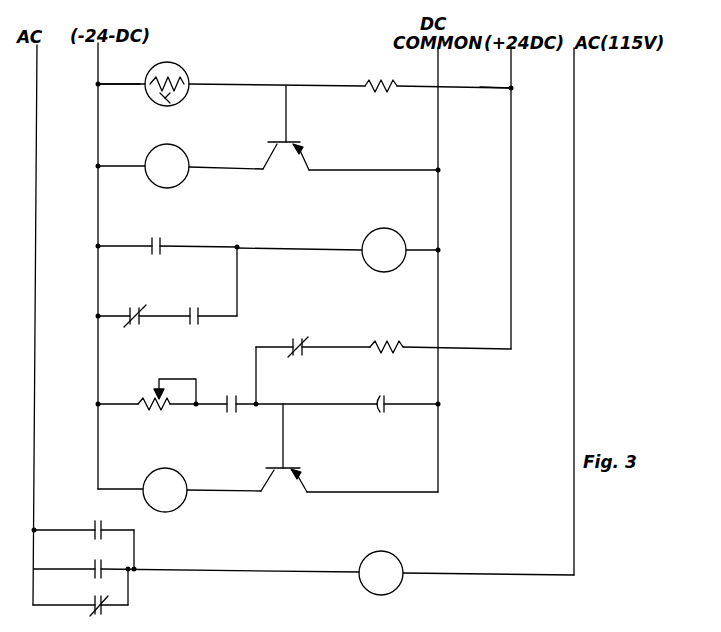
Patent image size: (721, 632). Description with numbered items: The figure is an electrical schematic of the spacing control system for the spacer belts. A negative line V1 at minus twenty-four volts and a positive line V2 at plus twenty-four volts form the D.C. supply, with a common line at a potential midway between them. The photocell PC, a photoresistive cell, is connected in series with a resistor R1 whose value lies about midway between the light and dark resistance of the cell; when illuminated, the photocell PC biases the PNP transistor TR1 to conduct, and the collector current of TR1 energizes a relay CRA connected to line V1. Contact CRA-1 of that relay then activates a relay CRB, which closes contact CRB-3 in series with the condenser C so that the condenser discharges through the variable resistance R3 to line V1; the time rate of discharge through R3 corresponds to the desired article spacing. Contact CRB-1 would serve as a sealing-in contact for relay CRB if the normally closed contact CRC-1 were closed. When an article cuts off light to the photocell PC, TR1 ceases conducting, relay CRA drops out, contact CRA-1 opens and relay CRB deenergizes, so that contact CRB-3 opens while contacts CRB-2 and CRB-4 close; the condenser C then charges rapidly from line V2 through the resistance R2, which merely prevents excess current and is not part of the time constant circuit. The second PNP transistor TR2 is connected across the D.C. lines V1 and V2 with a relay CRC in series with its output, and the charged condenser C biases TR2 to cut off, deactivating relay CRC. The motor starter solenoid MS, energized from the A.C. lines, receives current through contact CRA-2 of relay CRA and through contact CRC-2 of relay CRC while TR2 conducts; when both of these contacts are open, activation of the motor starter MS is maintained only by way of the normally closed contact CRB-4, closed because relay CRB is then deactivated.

The negative −24 v. line V1 is at (95, 73).
The positive +24 v. line V2 is at (516, 91).
The photocell PC is at (186, 84).
The resistor R1 is at (393, 80).
The transistor TR1 is at (306, 128).
The relay CRA is at (167, 166).
The relay CRB is at (384, 250).
The relay CRC is at (165, 490).
The contact CRA-1 is at (189, 240).
The normally closed contact CRC-1 is at (132, 328).
The contact CRB-1 is at (206, 330).
The contact CRB-2 is at (325, 343).
The resistance R2 is at (397, 341).
The variable resistance R3 is at (163, 409).
The contact CRB-3 is at (236, 418).
The condenser C is at (386, 415).
The transistor TR2 is at (303, 448).
The contact CRC-2 is at (129, 525).
The contact CRA-2 is at (149, 564).
The normally closed contact CRB-4 is at (128, 614).
The motor starter solenoid MS is at (385, 573).